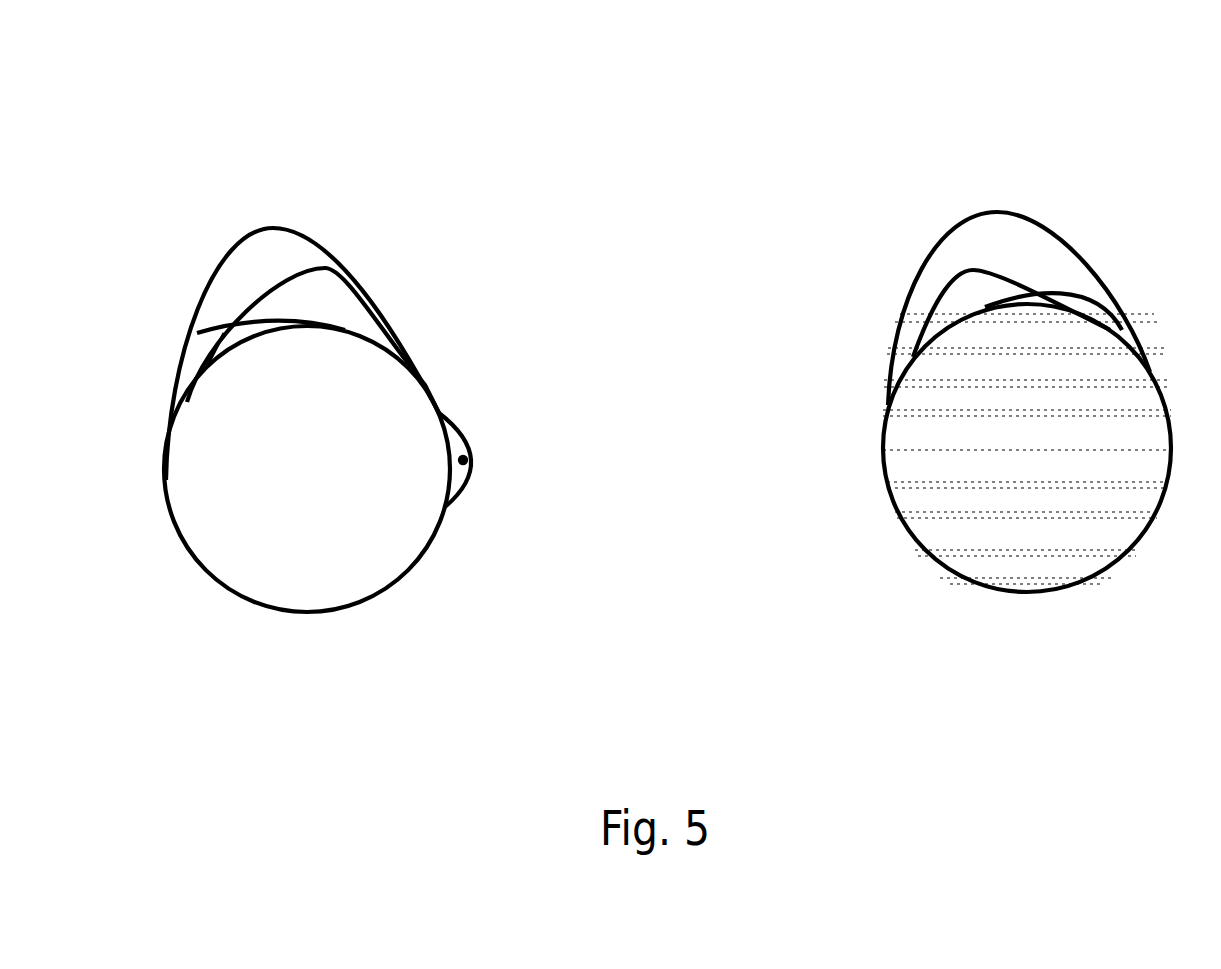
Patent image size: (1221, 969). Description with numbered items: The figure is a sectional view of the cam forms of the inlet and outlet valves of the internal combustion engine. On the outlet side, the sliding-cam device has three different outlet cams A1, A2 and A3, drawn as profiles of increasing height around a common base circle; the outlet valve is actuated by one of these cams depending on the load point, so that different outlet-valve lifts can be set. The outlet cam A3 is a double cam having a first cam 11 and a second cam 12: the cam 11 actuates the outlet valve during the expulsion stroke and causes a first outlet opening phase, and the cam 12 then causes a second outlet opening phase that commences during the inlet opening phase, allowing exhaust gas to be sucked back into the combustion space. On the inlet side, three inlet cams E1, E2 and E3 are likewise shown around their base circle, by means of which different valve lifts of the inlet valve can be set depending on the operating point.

The first cam 11 is at (343, 310).
The second cam 12 is at (463, 460).
The outlet cam A1 is at (171, 315).
The outlet cam A2 is at (269, 196).
The outlet cam A3 is at (358, 235).
The inlet cam E1 is at (1129, 280).
The inlet cam E2 is at (920, 268).
The inlet cam E3 is at (1015, 181).